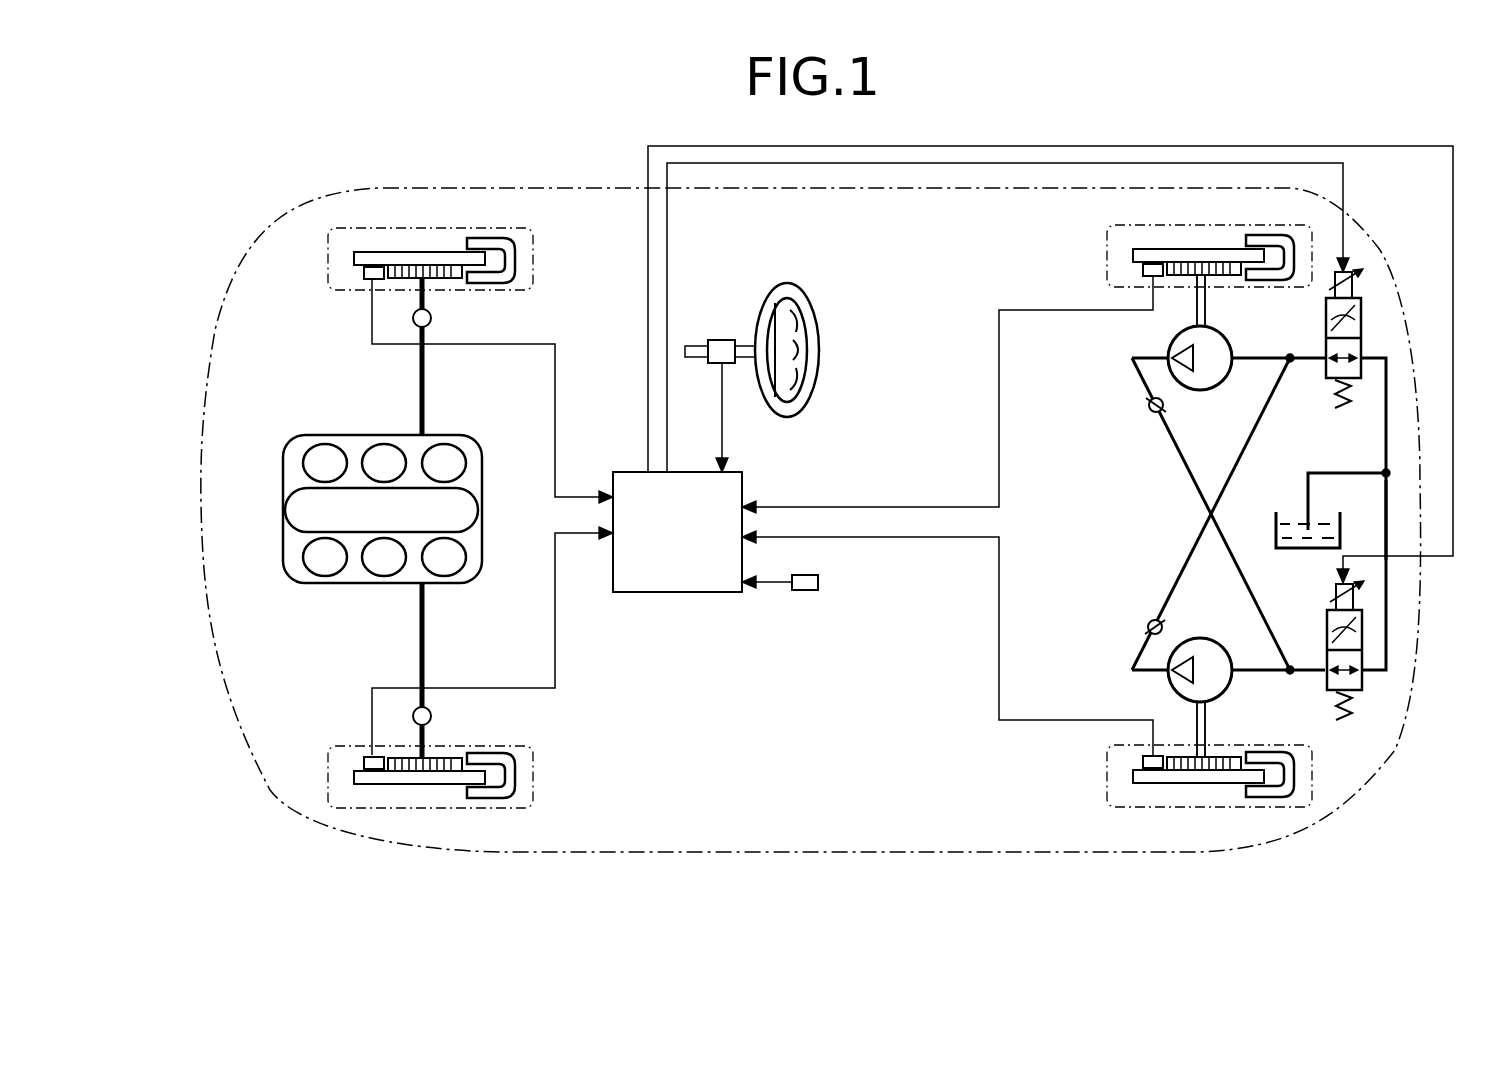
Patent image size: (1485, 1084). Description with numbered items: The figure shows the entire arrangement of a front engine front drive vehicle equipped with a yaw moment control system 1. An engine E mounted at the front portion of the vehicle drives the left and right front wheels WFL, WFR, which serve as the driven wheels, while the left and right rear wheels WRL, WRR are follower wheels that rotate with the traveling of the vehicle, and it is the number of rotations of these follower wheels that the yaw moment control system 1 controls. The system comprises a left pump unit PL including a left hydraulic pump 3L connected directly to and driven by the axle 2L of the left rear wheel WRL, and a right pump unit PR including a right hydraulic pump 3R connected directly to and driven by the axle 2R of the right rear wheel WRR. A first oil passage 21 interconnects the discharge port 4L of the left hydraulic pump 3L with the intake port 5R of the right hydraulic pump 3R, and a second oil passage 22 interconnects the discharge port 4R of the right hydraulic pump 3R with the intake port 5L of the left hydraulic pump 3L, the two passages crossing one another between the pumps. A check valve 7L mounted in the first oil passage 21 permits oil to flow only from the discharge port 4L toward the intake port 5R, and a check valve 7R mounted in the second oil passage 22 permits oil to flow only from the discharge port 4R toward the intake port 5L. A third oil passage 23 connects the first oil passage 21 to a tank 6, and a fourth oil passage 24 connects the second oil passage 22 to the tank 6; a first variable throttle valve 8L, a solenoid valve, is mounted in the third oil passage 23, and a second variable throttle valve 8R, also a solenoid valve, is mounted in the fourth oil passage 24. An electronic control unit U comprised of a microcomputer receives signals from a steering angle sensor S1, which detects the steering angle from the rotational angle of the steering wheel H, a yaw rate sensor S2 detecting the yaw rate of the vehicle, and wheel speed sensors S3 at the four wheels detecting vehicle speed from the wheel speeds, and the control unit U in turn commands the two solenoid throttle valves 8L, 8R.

The yaw moment control system 1 is at (1080, 556).
The engine E is at (325, 428).
The electronic control unit U is at (693, 552).
The steering wheel H is at (806, 318).
The steering angle sensor S1 is at (724, 348).
The yaw rate sensor S2 is at (808, 592).
The wheel speed sensor S3 is at (1143, 762).
The right front wheel WFR is at (330, 262).
The left front wheel WFL is at (330, 775).
The right rear wheel WRR is at (1107, 258).
The left rear wheel WRL is at (1107, 778).
The axle 2R is at (1205, 320).
The axle 2L is at (1205, 722).
The right hydraulic pump 3R is at (1203, 392).
The left hydraulic pump 3L is at (1200, 650).
The discharge port 4R is at (1168, 356).
The discharge port 4L is at (1168, 672).
The intake port 5R is at (1240, 358).
The intake port 5L is at (1236, 672).
The check valve 7R is at (1152, 414).
The check valve 7L is at (1148, 628).
The right pump unit PR is at (1158, 378).
The left pump unit PL is at (1150, 660).
The first variable throttle valve 8L is at (1362, 312).
The second variable throttle valve 8R is at (1365, 693).
The first oil passage 21 is at (1272, 402).
The second oil passage 22 is at (1240, 562).
The third oil passage 23 is at (1385, 430).
The fourth oil passage 24 is at (1386, 498).
The tank 6 is at (1280, 530).